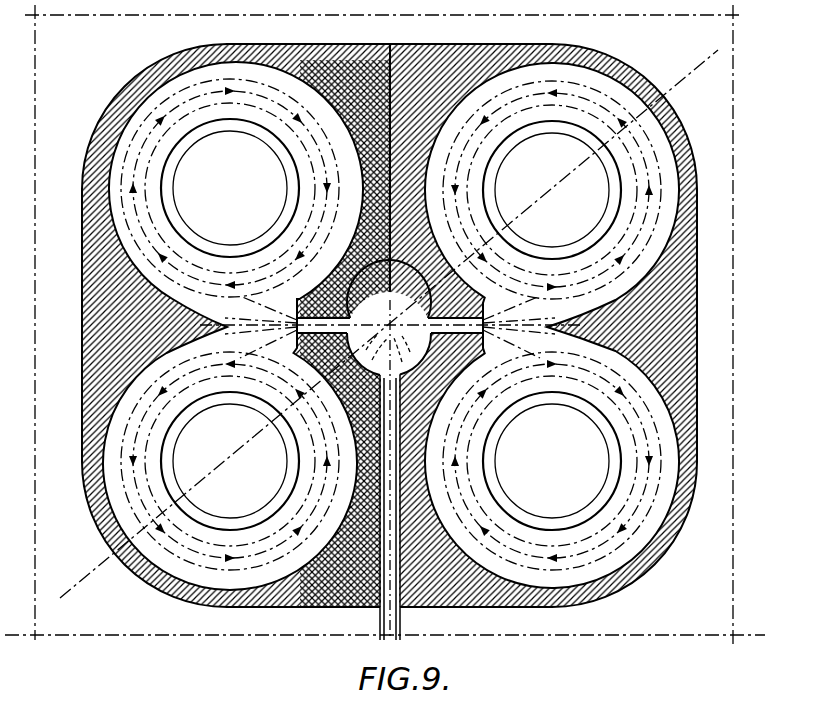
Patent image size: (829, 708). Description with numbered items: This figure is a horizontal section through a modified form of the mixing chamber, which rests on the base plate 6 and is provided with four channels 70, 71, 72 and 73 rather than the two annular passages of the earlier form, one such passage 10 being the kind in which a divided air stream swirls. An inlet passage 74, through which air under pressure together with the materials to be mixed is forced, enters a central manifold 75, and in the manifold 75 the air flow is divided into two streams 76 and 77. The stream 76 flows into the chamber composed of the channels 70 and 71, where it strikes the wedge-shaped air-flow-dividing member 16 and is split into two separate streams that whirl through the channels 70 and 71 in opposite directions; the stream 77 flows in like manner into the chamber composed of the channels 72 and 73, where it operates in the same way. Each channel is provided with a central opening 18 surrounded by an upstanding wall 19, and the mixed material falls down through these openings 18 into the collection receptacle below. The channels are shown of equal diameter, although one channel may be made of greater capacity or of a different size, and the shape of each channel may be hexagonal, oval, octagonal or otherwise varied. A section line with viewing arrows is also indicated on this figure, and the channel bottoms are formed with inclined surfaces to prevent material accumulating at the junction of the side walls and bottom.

The base plate 6 is at (724, 440).
The passage 10 is at (683, 30).
The wedge-shaped air-flow-dividing member 16 is at (200, 322).
The central opening 18 is at (523, 208).
The upstanding wall 19 is at (183, 233).
The channel 70 is at (182, 572).
The channel 71 is at (167, 88).
The channel 72 is at (631, 552).
The channel 73 is at (626, 95).
The inlet passage 74 is at (380, 614).
The manifold 75 is at (404, 333).
The stream 76 is at (287, 337).
The stream 77 is at (498, 333).